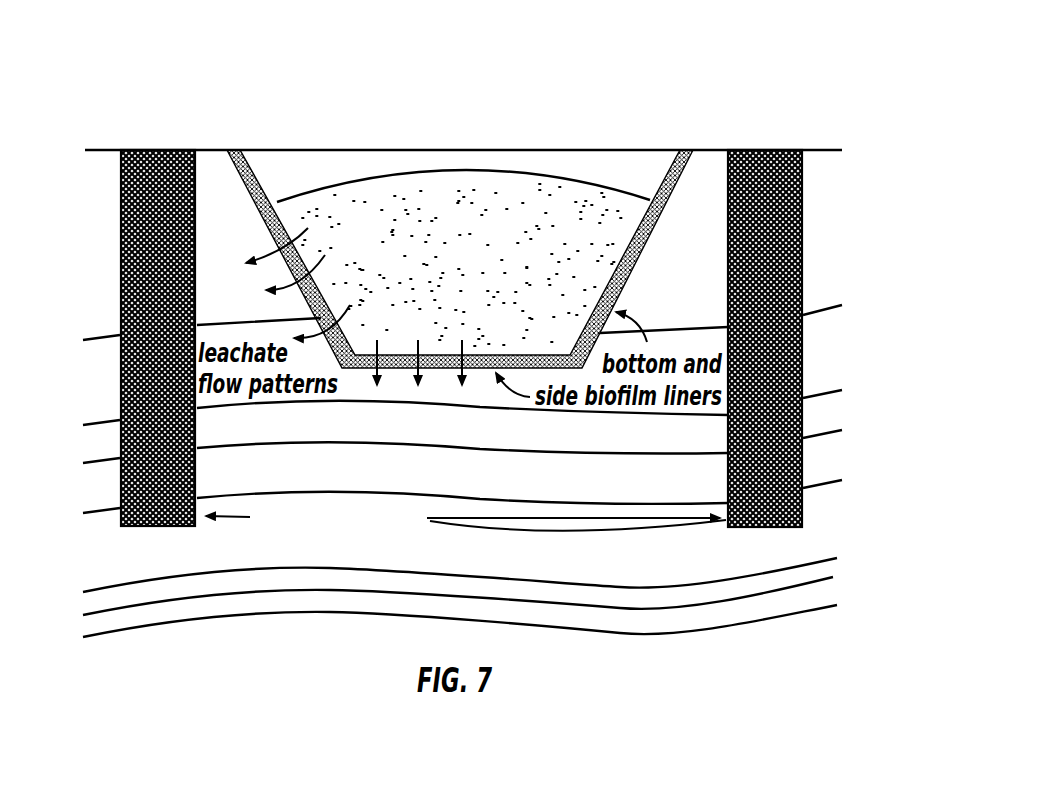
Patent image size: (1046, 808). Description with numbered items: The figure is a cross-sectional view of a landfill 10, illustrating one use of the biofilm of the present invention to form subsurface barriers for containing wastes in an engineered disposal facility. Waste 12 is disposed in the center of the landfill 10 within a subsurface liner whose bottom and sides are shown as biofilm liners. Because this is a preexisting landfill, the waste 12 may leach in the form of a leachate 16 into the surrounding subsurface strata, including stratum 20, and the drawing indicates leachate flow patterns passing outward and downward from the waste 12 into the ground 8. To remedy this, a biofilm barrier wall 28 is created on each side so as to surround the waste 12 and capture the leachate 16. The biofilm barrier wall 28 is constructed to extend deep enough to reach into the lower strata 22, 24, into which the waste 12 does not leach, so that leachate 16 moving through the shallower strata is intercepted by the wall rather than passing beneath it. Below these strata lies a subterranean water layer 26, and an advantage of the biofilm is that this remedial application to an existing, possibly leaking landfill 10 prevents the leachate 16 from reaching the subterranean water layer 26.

The landfill 10 is at (770, 104).
The waste 12 is at (478, 232).
The leachate 16 is at (279, 255).
The ground / earth formation 8 is at (829, 374).
The subsurface stratum 20 is at (702, 452).
The stratum 24 is at (701, 499).
The stratum 22 is at (694, 561).
The subterranean water layer 26 is at (832, 597).
The biofilm barrier wall 28 is at (122, 208).